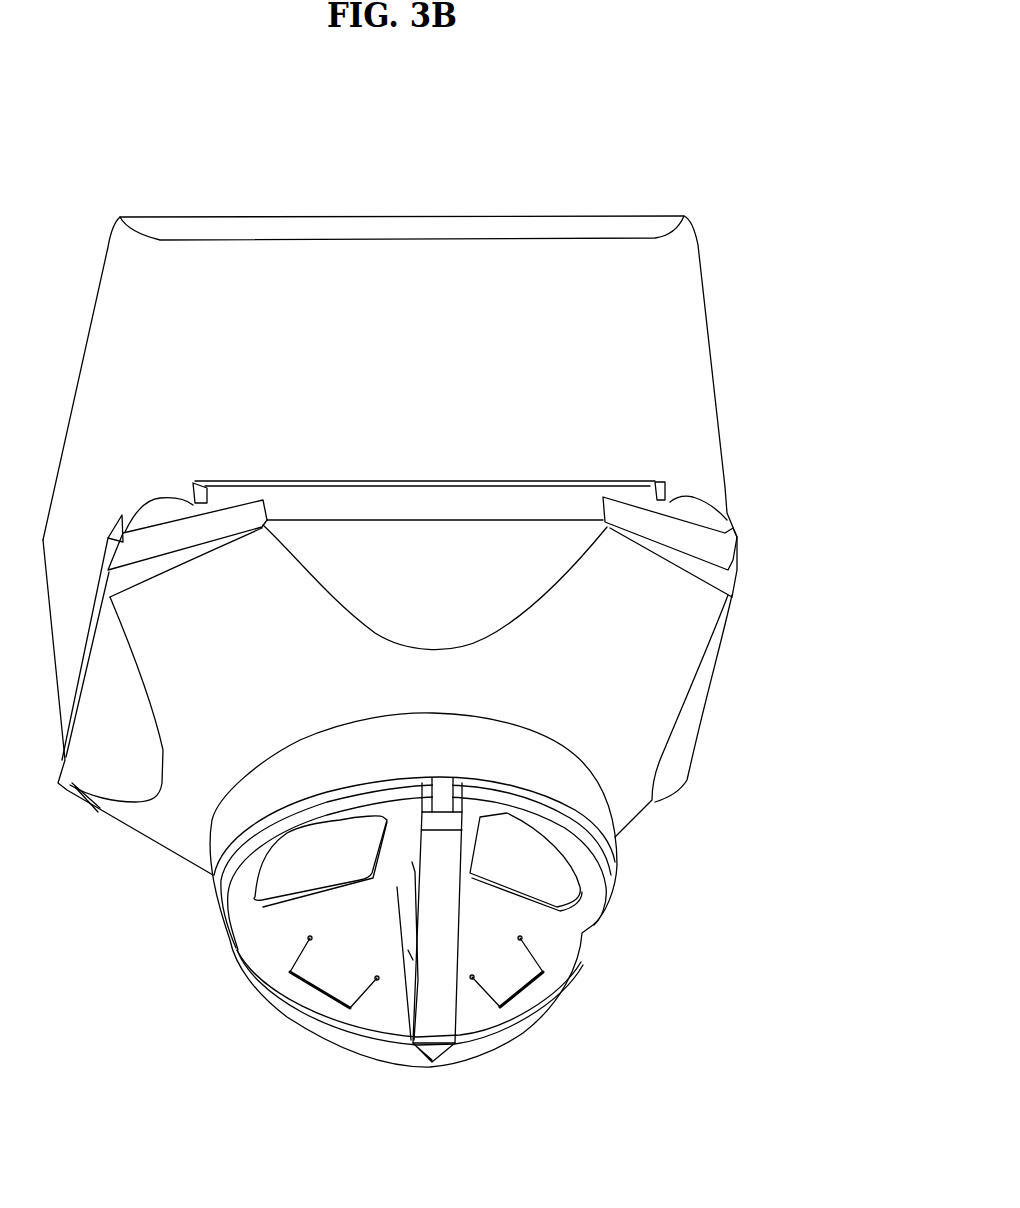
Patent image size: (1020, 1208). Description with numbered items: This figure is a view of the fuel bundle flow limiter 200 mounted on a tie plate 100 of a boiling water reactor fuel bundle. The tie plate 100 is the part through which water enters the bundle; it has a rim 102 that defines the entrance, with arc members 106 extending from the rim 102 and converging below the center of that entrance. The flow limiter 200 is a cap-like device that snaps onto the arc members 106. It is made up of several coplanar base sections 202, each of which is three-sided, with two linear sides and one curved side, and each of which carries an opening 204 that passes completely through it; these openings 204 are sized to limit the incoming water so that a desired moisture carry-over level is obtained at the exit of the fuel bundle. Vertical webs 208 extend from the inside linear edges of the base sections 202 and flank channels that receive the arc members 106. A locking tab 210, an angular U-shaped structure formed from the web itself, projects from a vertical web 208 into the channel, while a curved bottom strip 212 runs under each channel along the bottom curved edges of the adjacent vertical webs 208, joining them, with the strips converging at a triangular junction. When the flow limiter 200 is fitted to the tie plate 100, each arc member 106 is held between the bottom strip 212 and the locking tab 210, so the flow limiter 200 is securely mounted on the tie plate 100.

The tie plate 100 is at (752, 447).
The rim 102 is at (540, 745).
The arc members 106 is at (445, 802).
The fuel bundle flow limiter 200 is at (468, 945).
The base sections 202 is at (582, 857).
The opening 204 is at (283, 877).
The vertical webs 208 is at (263, 969).
The locking tab 210 is at (530, 987).
The bottom strip 212 is at (432, 1023).